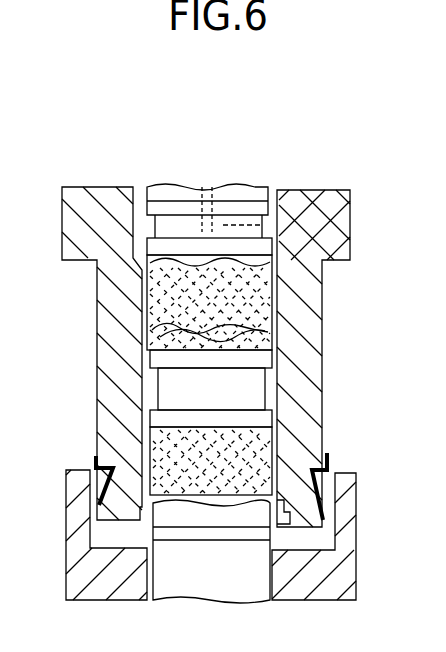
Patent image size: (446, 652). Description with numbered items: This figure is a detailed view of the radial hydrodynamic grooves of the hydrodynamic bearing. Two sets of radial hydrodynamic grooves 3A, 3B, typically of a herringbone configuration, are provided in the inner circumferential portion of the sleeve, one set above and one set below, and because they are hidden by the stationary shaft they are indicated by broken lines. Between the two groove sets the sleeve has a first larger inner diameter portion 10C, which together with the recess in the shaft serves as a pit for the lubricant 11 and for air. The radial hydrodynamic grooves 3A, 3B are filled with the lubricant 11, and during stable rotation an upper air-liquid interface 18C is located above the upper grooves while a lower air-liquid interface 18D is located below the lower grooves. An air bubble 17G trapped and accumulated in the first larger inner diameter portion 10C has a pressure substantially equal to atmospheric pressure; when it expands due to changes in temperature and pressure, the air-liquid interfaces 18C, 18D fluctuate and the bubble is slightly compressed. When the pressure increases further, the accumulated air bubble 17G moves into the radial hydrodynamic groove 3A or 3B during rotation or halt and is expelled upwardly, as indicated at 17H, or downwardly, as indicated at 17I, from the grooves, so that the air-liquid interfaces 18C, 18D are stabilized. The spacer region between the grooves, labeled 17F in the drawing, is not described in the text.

The radial hydrodynamic groove 3A is at (147, 293).
The radial hydrodynamic groove 3B is at (147, 447).
The first larger inner diameter portion 10C is at (140, 385).
The lubricant 11 is at (349, 219).
The spacer 17F is at (280, 393).
The air bubble 17G is at (298, 318).
The upwardly expelled air 17H is at (197, 252).
The downwardly expelled air 17I is at (283, 537).
The air-liquid interface 18C is at (166, 232).
The air-liquid interface 18D is at (191, 505).